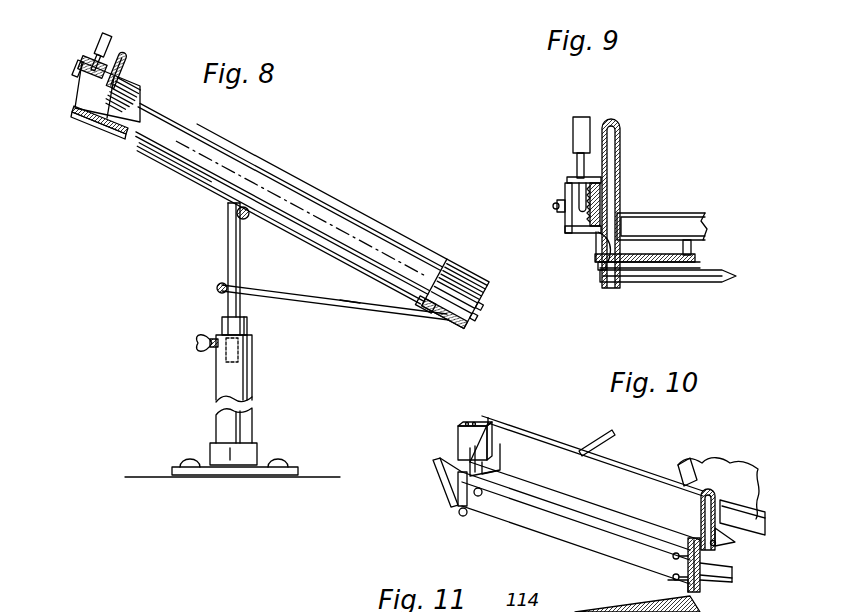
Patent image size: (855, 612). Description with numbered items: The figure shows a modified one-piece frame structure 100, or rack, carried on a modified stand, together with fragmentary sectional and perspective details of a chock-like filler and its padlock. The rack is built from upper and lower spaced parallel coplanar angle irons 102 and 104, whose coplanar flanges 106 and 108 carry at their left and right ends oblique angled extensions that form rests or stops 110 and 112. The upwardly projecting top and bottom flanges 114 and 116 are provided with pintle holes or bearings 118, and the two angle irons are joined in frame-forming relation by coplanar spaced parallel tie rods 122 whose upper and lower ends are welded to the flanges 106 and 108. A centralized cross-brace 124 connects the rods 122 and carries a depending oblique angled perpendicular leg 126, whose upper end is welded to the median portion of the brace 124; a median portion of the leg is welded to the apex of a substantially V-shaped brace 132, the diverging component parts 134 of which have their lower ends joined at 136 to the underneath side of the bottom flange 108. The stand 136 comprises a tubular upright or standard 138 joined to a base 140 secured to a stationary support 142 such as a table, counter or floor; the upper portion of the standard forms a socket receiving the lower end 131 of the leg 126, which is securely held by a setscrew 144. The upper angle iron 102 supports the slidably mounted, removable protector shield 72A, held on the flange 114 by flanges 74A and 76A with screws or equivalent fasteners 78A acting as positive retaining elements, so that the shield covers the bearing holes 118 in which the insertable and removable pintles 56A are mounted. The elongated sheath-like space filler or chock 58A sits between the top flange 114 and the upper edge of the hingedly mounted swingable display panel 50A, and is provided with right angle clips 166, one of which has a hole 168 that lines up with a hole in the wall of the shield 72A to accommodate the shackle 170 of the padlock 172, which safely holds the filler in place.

In FIG. 8, the display panel 50A is at (258, 168).
In FIG. 9, the display panel 50A is at (698, 215).
In FIG. 10, the display panel 50A is at (725, 462).
In FIG. 8, the chock-like space filler 58A is at (131, 63).
In FIG. 9, the chock-like space filler 58A is at (622, 172).
In FIG. 10, the chock-like space filler 58A is at (630, 455).
In FIG. 8, the frame structure 100 is at (190, 176).
In FIG. 8, the upper angle iron 102 is at (92, 120).
In FIG. 9, the upper angle iron 102 is at (698, 252).
In FIG. 10, the upper angle iron 102 is at (733, 568).
In FIG. 8, the lower angle iron 104 is at (472, 272).
In FIG. 8, the coplanar flange 106 is at (111, 124).
In FIG. 9, the coplanar flange 106 is at (645, 243).
In FIG. 10, the coplanar flange 106 is at (730, 573).
In FIG. 8, the coplanar flange 108 is at (467, 327).
In FIG. 9, the rest or stop 110 is at (682, 246).
In FIG. 10, the rest or stop 110 is at (442, 460).
In FIG. 8, the rest or stop 112 is at (452, 270).
In FIG. 8, the top flange 114 is at (85, 89).
In FIG. 9, the top flange 114 is at (592, 248).
In FIG. 10, the top flange 114 is at (715, 537).
In FIG. 8, the bottom flange 116 is at (484, 296).
In FIG. 9, the pintle hole 118 is at (604, 266).
In FIG. 10, the pintle hole 118 is at (672, 560).
In FIG. 8, the tie rod 122 is at (327, 250).
In FIG. 9, the tie rod 122 is at (722, 276).
In FIG. 10, the tie rod 122 is at (457, 512).
In FIG. 8, the cross-brace 124 is at (248, 220).
In FIG. 8, the leg 126 is at (230, 245).
In FIG. 8, the lower end of leg 131 is at (255, 352).
In FIG. 8, the V-shaped brace 132 is at (303, 296).
In FIG. 8, the diverging component part 134 is at (350, 302).
In FIG. 8, the stand 136 is at (207, 378).
In FIG. 8, the tubular standard 138 is at (253, 387).
In FIG. 8, the base 140 is at (290, 468).
In FIG. 8, the stationary support 142 is at (336, 478).
In FIG. 8, the setscrew 144 is at (203, 346).
In FIG. 9, the right angle clip 166 is at (580, 178).
In FIG. 10, the right angle clip 166 is at (498, 460).
In FIG. 10, the hole 168 is at (458, 452).
In FIG. 9, the shackle 170 is at (581, 162).
In FIG. 8, the padlock 172 is at (107, 38).
In FIG. 9, the padlock 172 is at (594, 117).
In FIG. 10, the padlock 172 is at (462, 425).
In FIG. 9, the protector shield 72A is at (566, 223).
In FIG. 10, the protector shield 72A is at (572, 525).
In FIG. 10, the shield flange 74A is at (672, 582).
In FIG. 9, the shield flange 76A is at (602, 208).
In FIG. 9, the screw 78A is at (557, 204).
In FIG. 10, the screw 78A is at (477, 497).
In FIG. 9, the pintle 56A is at (580, 235).
In FIG. 10, the pintle 56A is at (688, 547).